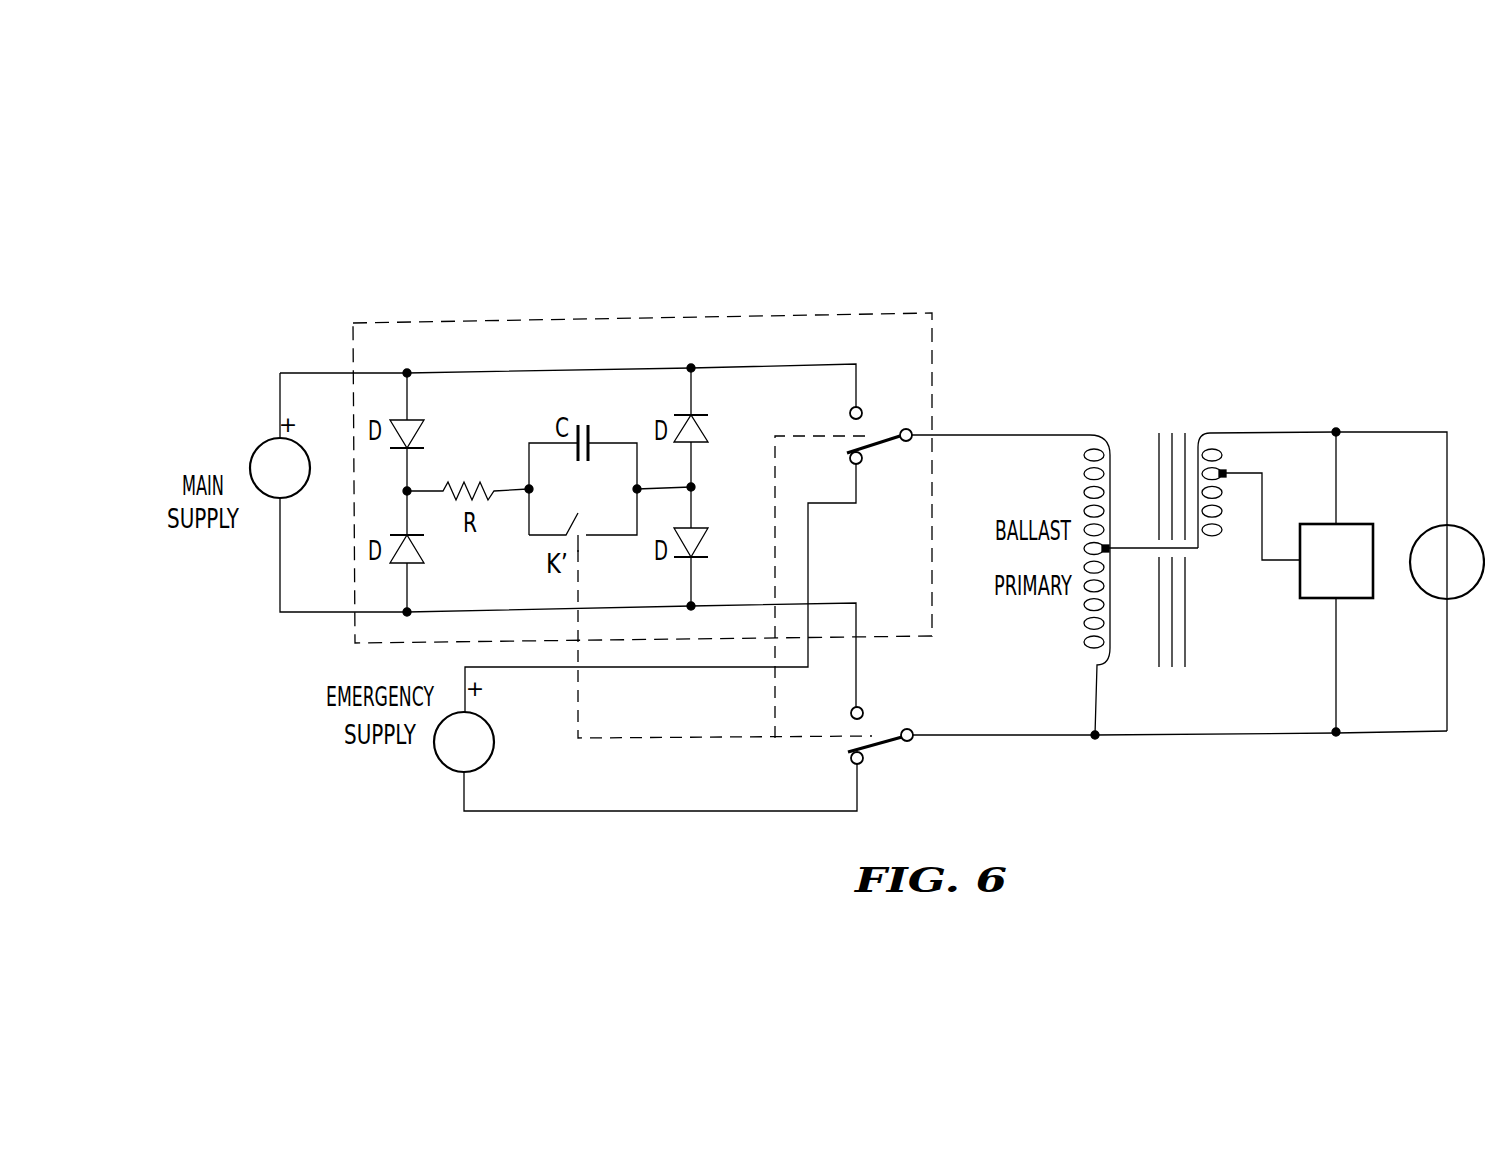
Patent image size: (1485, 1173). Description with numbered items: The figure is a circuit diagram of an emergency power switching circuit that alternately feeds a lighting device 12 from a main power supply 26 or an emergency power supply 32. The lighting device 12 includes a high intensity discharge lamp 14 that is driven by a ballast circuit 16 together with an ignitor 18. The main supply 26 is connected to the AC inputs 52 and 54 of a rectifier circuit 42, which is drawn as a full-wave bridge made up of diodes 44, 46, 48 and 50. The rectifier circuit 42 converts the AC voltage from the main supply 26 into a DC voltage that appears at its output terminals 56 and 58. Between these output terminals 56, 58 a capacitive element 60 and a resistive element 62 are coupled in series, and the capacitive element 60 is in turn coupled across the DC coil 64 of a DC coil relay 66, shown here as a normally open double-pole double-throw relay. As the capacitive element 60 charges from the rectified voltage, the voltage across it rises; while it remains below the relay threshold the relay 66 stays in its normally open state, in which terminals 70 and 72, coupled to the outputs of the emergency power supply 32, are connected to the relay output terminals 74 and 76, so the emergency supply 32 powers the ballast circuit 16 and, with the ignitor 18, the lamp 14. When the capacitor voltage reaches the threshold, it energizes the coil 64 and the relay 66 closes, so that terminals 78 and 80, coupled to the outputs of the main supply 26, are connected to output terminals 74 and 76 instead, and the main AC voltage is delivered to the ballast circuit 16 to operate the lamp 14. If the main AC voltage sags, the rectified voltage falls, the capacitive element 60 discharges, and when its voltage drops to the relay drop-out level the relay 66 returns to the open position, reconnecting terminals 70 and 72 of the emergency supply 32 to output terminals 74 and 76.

The lighting device 12 is at (1185, 388).
The high intensity discharge lamp 14 is at (1432, 530).
The ballast circuit 16 is at (1133, 704).
The ignitor 18 is at (1314, 599).
The main power supply 26 is at (306, 490).
The emergency power supply 32 is at (448, 765).
The rectifier circuit 42 is at (903, 288).
The diode 44 is at (425, 429).
The diode 46 is at (424, 560).
The diode 48 is at (709, 432).
The diode 50 is at (709, 540).
The AC input 52 is at (411, 370).
The AC input 54 is at (407, 613).
The output terminal 56 is at (407, 491).
The output terminal 58 is at (696, 487).
The capacitive element 60 is at (592, 434).
The resistive element 62 is at (480, 488).
The DC coil 64 is at (584, 538).
The DC coil relay 66 is at (1000, 405).
The relay terminal 70 is at (862, 463).
The relay terminal 72 is at (863, 764).
The relay output terminal 74 is at (912, 430).
The relay output terminal 76 is at (913, 730).
The relay terminal 78 is at (863, 408).
The relay terminal 80 is at (863, 708).